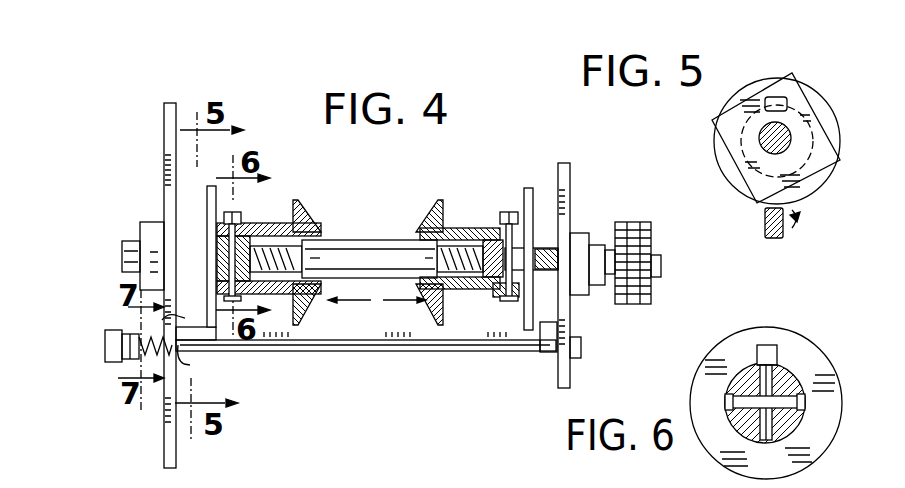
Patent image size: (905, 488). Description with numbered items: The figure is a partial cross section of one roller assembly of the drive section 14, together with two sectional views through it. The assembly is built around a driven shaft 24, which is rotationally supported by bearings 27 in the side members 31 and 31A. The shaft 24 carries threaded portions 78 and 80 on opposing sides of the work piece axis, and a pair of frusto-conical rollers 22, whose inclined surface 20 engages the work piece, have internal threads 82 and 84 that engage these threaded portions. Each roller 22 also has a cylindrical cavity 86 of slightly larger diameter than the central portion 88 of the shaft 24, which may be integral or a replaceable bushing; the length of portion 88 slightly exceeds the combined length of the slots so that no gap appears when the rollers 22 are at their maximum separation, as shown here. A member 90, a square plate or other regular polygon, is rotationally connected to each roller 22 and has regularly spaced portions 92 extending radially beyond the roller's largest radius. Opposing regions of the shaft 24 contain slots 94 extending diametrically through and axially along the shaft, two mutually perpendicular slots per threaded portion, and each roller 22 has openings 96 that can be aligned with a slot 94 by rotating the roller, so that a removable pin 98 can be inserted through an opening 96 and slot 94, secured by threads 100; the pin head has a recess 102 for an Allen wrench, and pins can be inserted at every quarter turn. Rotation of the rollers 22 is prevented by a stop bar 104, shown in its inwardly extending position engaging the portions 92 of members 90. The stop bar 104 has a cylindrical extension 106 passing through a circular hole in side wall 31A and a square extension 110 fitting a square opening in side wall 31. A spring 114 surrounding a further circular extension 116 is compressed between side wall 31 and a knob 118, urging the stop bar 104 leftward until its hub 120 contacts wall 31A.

In FIG. 4, the drive section 14 is at (594, 4).
In FIG. 4, the inclined surface 20 is at (305, 208).
In FIG. 4, the frusto-conical roller 22 is at (280, 222).
In FIG. 5, the frusto-conical roller 22 is at (750, 84).
In FIG. 6, the frusto-conical roller 22 is at (692, 385).
In FIG. 4, the driven shaft 24 is at (372, 240).
In FIG. 5, the driven shaft 24 is at (795, 130).
In FIG. 4, the bearing 27 is at (152, 222).
In FIG. 4, the side member 31 is at (163, 133).
In FIG. 4, the side member 31A is at (570, 176).
In FIG. 4, the threaded portion 78 is at (330, 259).
In FIG. 4, the threaded portion 80 is at (415, 261).
In FIG. 4, the internal thread 82 is at (256, 292).
In FIG. 4, the internal thread 84 is at (474, 286).
In FIG. 4, the cylindrical cavity 86 is at (310, 283).
In FIG. 4, the shaft portion 88 is at (368, 284).
In FIG. 4, the member 90 is at (212, 186).
In FIG. 5, the member 90 is at (712, 120).
In FIG. 4, the radially extending portion 92 is at (211, 280).
In FIG. 5, the radially extending portion 92 is at (790, 75).
In FIG. 4, the slot 94 is at (260, 236).
In FIG. 6, the slot 94 is at (800, 372).
In FIG. 4, the opening 96 is at (504, 302).
In FIG. 6, the opening 96 is at (725, 402).
In FIG. 4, the removable pin 98 is at (226, 210).
In FIG. 5, the removable pin 98 is at (774, 96).
In FIG. 6, the removable pin 98 is at (760, 345).
In FIG. 4, the threads 100 is at (222, 219).
In FIG. 6, the threads 100 is at (750, 362).
In FIG. 6, the recess 102 is at (772, 340).
In FIG. 4, the stop bar 104 is at (372, 356).
In FIG. 5, the stop bar 104 is at (760, 224).
In FIG. 4, the cylindrical extension 106 is at (546, 355).
In FIG. 4, the square extension 110 is at (208, 362).
In FIG. 4, the spring 114 is at (142, 350).
In FIG. 4, the circular extension 116 is at (193, 305).
In FIG. 4, the knob 118 is at (108, 328).
In FIG. 4, the hub 120 is at (582, 348).